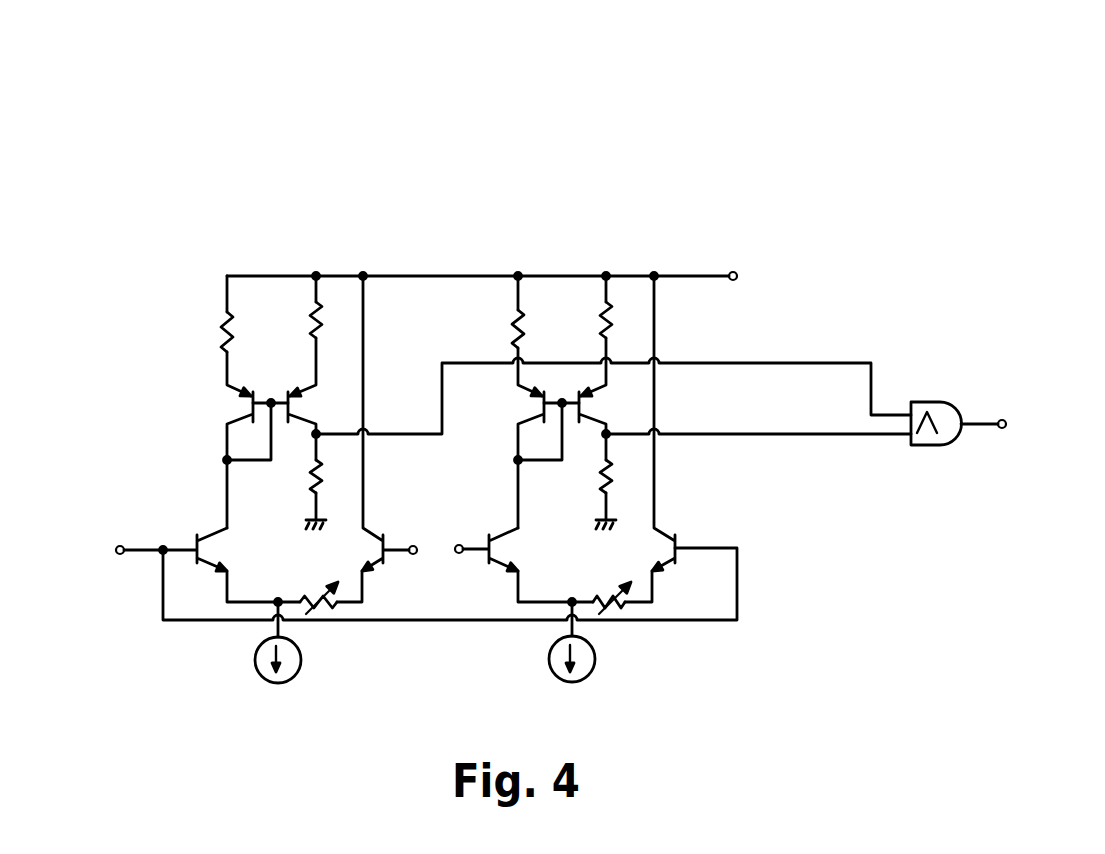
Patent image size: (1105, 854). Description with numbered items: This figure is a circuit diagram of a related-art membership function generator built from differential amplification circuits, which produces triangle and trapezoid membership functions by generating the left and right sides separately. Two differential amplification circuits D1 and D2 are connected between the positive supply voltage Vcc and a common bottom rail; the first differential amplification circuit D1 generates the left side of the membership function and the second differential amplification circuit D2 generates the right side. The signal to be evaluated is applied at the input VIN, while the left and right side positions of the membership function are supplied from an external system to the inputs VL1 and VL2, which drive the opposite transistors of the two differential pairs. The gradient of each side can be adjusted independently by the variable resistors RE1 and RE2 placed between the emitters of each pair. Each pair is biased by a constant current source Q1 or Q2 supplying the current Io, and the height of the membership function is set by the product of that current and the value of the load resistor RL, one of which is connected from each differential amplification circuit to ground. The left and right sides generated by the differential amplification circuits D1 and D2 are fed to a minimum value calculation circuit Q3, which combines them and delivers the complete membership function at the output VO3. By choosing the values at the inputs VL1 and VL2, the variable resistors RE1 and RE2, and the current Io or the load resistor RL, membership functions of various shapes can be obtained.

The differential amplification circuit D1 is at (326, 256).
The differential amplification circuit D2 is at (602, 256).
The load resistor RL is at (476, 481).
The variable resistor RE1 is at (313, 583).
The variable resistor RE2 is at (606, 583).
The constant current source Q1 is at (301, 660).
The constant current source Q2 is at (595, 659).
The minimum value calculation circuit Q3 is at (932, 402).
The input VIN is at (170, 565).
The input VL1 is at (383, 439).
The input VL2 is at (507, 553).
The output VO3 is at (1014, 424).
The supply voltage Vcc is at (566, 272).